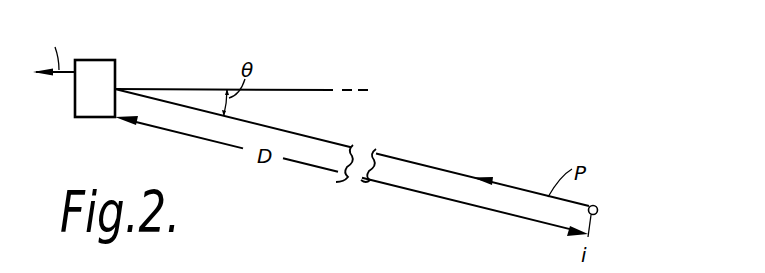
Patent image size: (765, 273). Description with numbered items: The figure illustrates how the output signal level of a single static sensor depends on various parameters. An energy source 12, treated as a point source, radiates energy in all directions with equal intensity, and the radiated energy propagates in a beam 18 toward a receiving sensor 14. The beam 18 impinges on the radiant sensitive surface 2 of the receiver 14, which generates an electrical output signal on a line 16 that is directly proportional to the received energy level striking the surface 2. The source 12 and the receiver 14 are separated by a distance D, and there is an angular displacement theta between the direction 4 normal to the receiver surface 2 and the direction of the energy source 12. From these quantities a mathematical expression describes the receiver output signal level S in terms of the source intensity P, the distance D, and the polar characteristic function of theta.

The radiant sensitive surface 2 is at (116, 69).
The direction normal to the receiver surface 4 is at (305, 88).
The energy source 12 is at (603, 205).
The receiving sensor 14 is at (93, 78).
The line 16 is at (63, 80).
The beam 18 is at (430, 164).